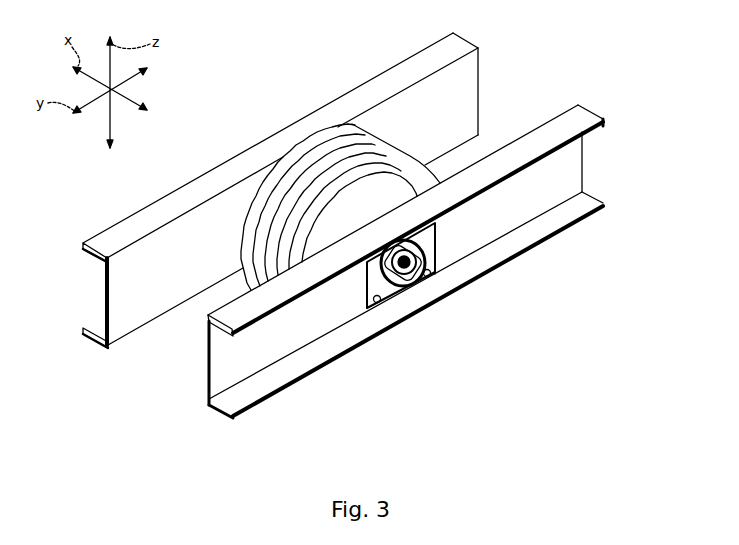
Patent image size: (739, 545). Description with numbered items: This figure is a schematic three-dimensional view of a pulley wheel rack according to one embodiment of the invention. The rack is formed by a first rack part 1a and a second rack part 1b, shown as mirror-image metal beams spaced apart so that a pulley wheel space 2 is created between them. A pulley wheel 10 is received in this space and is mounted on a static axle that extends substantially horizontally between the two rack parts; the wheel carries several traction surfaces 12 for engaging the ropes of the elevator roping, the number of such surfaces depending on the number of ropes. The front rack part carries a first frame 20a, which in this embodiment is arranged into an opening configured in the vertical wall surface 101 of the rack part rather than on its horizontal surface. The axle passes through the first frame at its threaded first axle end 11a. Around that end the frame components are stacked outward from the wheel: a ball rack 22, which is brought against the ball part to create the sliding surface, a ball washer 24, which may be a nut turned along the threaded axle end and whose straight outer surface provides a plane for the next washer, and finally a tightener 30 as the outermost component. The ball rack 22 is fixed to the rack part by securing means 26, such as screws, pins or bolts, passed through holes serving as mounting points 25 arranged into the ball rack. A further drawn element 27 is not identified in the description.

The first rack part 1a is at (238, 378).
The second rack part 1b is at (103, 285).
The pulley wheel space 2 is at (197, 316).
The pulley wheel 10 is at (318, 178).
The traction surface 12 is at (292, 190).
The vertical wall surface 101 is at (165, 289).
The first frame 20a is at (405, 302).
The ball rack 22 is at (388, 317).
The ball washer 24 is at (404, 284).
The mounting points 25 is at (447, 262).
The securing means 26 is at (450, 287).
The fastener 27 is at (404, 312).
The tightener 30 is at (448, 279).
The first axle end 11a is at (437, 273).